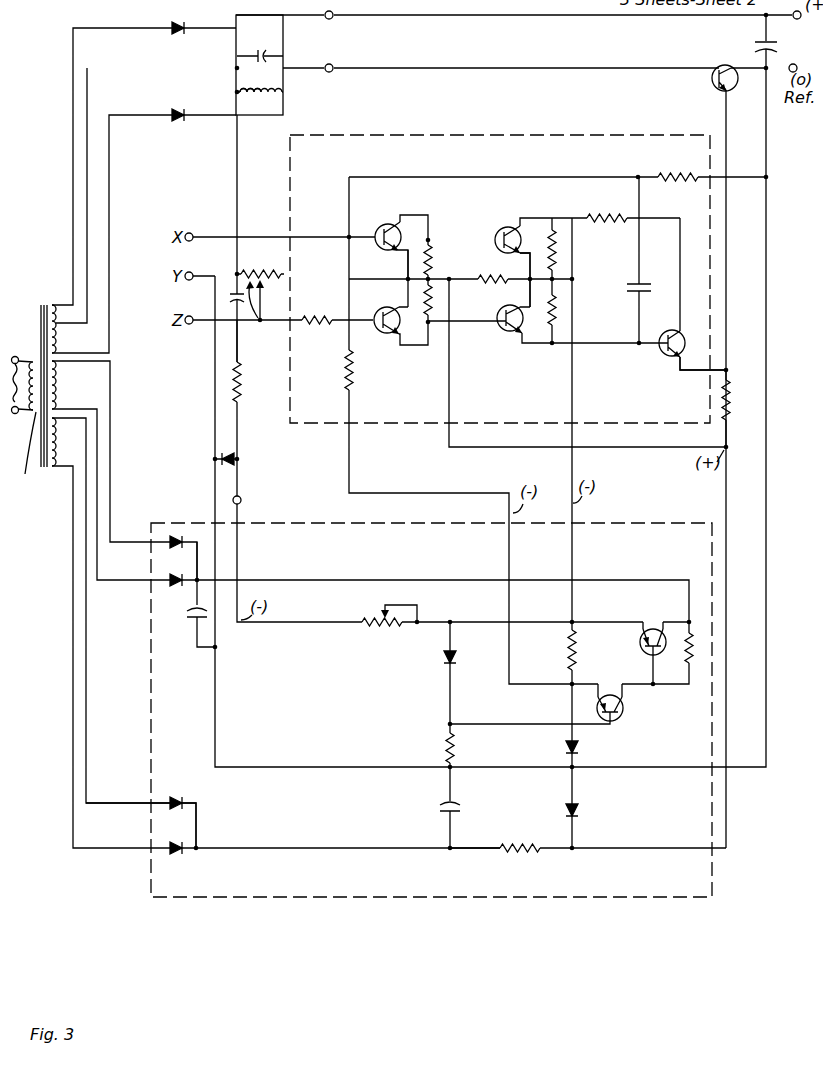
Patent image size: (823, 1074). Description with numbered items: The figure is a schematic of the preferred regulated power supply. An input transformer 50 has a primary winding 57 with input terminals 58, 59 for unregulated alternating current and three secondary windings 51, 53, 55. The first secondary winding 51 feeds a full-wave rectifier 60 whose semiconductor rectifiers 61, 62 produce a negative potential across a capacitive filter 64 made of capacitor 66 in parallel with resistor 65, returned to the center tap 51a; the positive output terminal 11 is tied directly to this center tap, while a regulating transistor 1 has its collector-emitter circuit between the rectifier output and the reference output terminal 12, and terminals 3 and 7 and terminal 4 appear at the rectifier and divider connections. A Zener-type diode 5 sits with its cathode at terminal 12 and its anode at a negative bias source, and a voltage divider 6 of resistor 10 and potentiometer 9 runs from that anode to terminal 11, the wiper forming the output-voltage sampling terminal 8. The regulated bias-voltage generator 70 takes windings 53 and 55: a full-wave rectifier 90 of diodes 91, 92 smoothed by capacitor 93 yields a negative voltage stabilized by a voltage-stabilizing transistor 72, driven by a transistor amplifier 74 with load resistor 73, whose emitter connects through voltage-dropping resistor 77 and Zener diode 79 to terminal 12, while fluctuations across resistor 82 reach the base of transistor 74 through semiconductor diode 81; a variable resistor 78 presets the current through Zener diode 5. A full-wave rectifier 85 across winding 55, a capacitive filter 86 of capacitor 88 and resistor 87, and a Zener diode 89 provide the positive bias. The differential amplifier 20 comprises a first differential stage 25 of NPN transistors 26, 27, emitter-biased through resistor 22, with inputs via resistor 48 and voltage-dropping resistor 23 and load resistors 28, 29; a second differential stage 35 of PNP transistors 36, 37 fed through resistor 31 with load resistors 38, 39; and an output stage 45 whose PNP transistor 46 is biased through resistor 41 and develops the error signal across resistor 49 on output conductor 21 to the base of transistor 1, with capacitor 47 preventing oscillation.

The regulating transistor 1 is at (722, 66).
The terminal 3 is at (331, 20).
The terminal 4 is at (242, 500).
The Zener-type diode 5 is at (232, 456).
The voltage divider 6 is at (242, 362).
The terminal 7 is at (327, 64).
The output-voltage sampling terminal 8 is at (262, 323).
The potentiometer 9 is at (267, 284).
The resistor 10 is at (242, 385).
The positive output terminal 11 is at (797, 20).
The reference output terminal 12 is at (796, 66).
The differential amplifier 20 is at (440, 138).
The output conductor 21 is at (728, 285).
The voltage-dropping resistor 22 is at (345, 366).
The voltage-dropping resistor 23 is at (325, 305).
The first differential stage of amplification 25 is at (402, 272).
The NPN transistor 26 is at (382, 230).
The NPN transistor 27 is at (381, 312).
The load resistor 28 is at (432, 262).
The load resistor 29 is at (427, 312).
The resistor 31 is at (489, 283).
The second differential stage of amplification 35 is at (526, 276).
The PNP transistor 36 is at (508, 227).
The PNP transistor 37 is at (500, 333).
The load resistor 38 is at (549, 258).
The load resistor 39 is at (549, 318).
The resistor 41 is at (628, 217).
The output stage 45 is at (648, 402).
The PNP transistor 46 is at (665, 334).
The capacitor 47 is at (647, 285).
The resistor 48 is at (682, 178).
The resistor 49 is at (729, 397).
The input transformer 50 is at (57, 288).
The first secondary winding 51 is at (60, 338).
The center tap 51a is at (75, 197).
The second secondary winding 53 is at (61, 388).
The third secondary winding 55 is at (61, 451).
The primary winding 57 is at (25, 453).
The input terminal 58 is at (17, 356).
The input terminal 59 is at (23, 422).
The full-wave rectifier 60 is at (218, 91).
The semiconductor rectifier 61 is at (180, 22).
The semiconductor rectifier 62 is at (181, 121).
The capacitive filter 64 is at (261, 81).
The resistor 65 is at (272, 97).
The capacitor 66 is at (269, 58).
The regulated bias-voltage generator 70 is at (440, 898).
The voltage-stabilizing transistor 72 is at (654, 626).
The resistor 73 is at (686, 648).
The transistor amplifier 74 is at (625, 710).
The voltage-dropping resistor 77 is at (578, 658).
The variable resistor 78 is at (380, 627).
The Zener-type semiconductor diode 79 is at (566, 750).
The semiconductor diode 81 is at (444, 659).
The resistor 82 is at (448, 744).
The full-wave rectifier 85 is at (239, 837).
The capacitive filter 86 is at (491, 842).
The resistor 87 is at (505, 843).
The capacitor 88 is at (440, 813).
The Zener-type semiconductor diode 89 is at (578, 815).
The full-wave rectifier 90 is at (193, 570).
The semiconductor diode 91 is at (185, 540).
The semiconductor diode 92 is at (184, 588).
The capacitor 93 is at (192, 622).